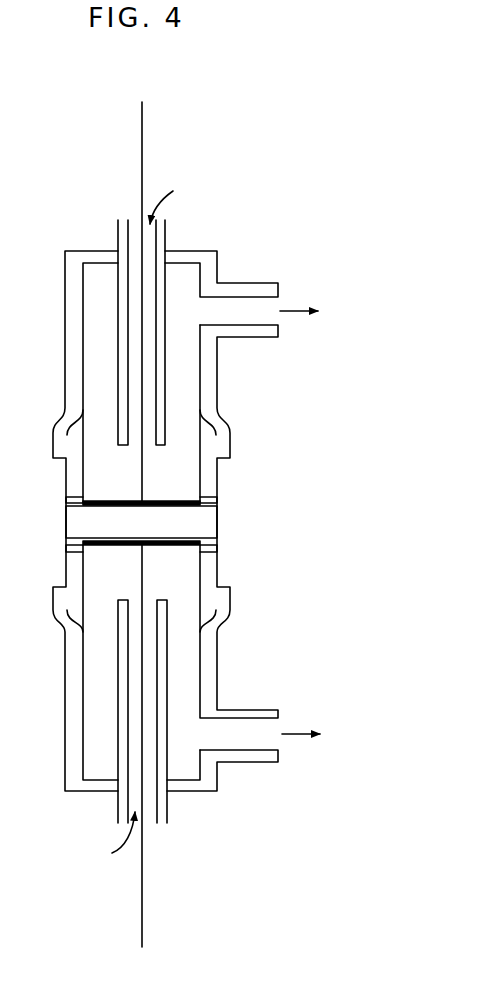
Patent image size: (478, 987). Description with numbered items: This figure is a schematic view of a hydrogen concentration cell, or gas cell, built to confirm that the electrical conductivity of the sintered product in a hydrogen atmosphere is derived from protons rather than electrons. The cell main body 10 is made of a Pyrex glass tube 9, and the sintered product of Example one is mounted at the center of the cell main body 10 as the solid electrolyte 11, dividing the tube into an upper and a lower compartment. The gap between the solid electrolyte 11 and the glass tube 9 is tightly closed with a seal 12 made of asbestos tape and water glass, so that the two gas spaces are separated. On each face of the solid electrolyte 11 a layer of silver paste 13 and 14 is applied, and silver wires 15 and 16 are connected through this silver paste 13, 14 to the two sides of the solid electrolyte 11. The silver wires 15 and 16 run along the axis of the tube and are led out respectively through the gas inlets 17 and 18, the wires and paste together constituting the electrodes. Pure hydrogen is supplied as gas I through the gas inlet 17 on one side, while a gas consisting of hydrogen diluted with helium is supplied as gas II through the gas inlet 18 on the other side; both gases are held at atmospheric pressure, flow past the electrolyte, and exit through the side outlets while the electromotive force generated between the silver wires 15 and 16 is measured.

The glass tube 9 is at (66, 348).
The cell main body 10 is at (280, 413).
The solid electrolyte 11 is at (82, 528).
The seal 12 is at (72, 500).
The silver paste 13 is at (172, 503).
The silver paste 14 is at (168, 543).
The silver wire 15 is at (142, 119).
The silver wire 16 is at (142, 930).
The gas inlet 17 is at (135, 226).
The gas inlet 18 is at (149, 826).